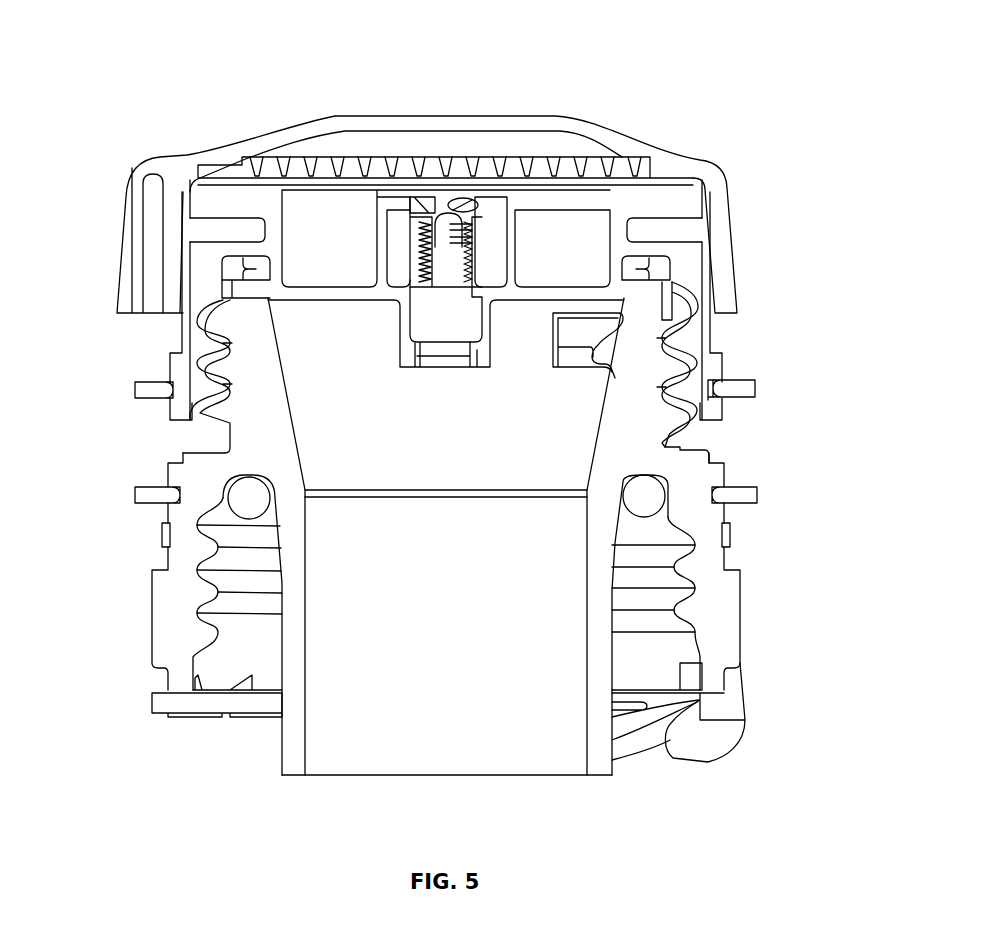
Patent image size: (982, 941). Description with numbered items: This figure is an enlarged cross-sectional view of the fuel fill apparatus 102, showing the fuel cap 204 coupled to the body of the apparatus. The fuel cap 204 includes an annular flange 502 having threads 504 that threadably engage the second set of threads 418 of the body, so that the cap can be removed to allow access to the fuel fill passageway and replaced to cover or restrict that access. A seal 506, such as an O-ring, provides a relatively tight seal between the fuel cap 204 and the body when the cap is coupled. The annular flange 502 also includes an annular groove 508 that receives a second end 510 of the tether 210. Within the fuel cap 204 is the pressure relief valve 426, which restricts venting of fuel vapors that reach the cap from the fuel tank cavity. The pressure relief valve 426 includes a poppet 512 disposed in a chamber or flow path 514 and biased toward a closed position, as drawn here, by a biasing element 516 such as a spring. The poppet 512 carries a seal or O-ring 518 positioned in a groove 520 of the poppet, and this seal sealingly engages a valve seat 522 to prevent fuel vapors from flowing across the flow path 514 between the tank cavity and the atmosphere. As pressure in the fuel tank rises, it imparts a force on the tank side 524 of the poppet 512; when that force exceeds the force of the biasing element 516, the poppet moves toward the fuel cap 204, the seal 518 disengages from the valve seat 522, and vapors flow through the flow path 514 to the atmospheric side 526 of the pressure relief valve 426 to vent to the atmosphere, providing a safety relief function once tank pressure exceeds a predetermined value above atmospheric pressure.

The fuel fill apparatus 102 is at (688, 105).
The fuel cap 204 is at (712, 178).
The tether 210 is at (134, 385).
The second set of threads 418 is at (700, 305).
The pressure relief valve 426 is at (492, 203).
The annular flange 502 is at (668, 350).
The threads 504 is at (672, 358).
The seal 506 is at (655, 270).
The annular groove 508 is at (716, 390).
The second end 510 is at (754, 390).
The poppet 512 is at (422, 192).
The flow path 514 is at (380, 197).
The biasing element 516 is at (418, 262).
The seal or O-ring 518 is at (372, 192).
The groove 520 is at (466, 206).
The valve seat 522 is at (466, 206).
The tank side 524 is at (428, 370).
The atmospheric side 526 is at (415, 244).